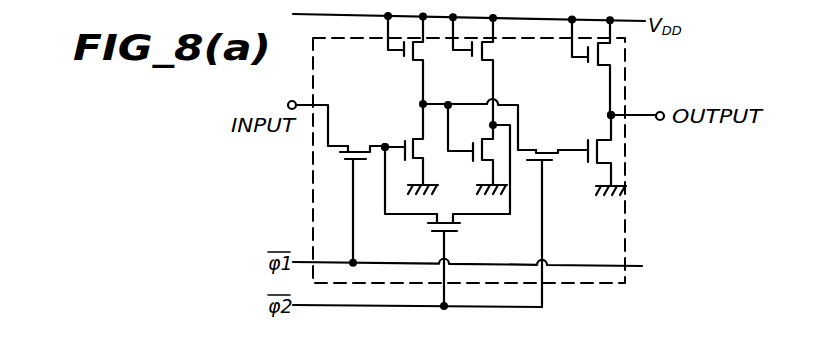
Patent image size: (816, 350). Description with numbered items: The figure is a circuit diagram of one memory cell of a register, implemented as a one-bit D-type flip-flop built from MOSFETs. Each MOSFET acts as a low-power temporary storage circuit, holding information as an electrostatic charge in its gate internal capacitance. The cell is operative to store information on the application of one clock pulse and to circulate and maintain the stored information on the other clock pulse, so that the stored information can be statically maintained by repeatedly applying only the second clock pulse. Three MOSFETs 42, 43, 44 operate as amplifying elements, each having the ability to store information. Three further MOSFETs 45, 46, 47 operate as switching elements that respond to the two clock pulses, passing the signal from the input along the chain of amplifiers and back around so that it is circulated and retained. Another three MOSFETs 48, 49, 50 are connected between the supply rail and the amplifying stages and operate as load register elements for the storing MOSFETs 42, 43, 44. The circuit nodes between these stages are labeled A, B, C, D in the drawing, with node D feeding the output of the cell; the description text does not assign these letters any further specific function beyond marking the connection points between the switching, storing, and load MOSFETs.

The MOSFET 42 is at (415, 133).
The MOSFET 43 is at (470, 163).
The MOSFET 44 is at (595, 135).
The MOSFET 45 is at (342, 170).
The MOSFET 46 is at (458, 230).
The MOSFET 47 is at (553, 163).
The MOSFET 48 is at (404, 62).
The MOSFET 49 is at (483, 63).
The MOSFET 50 is at (587, 66).
The node A is at (389, 152).
The node B is at (446, 110).
The node C is at (560, 148).
The node D is at (620, 108).